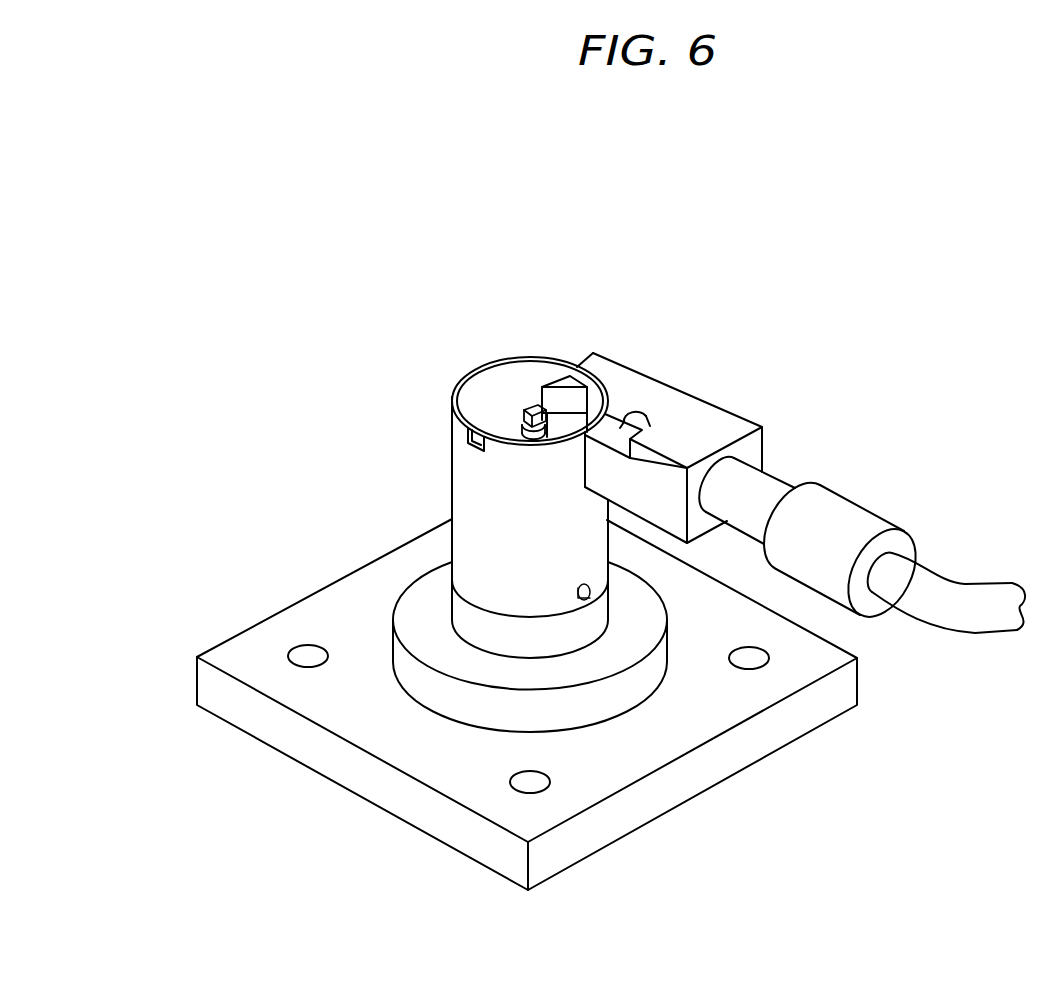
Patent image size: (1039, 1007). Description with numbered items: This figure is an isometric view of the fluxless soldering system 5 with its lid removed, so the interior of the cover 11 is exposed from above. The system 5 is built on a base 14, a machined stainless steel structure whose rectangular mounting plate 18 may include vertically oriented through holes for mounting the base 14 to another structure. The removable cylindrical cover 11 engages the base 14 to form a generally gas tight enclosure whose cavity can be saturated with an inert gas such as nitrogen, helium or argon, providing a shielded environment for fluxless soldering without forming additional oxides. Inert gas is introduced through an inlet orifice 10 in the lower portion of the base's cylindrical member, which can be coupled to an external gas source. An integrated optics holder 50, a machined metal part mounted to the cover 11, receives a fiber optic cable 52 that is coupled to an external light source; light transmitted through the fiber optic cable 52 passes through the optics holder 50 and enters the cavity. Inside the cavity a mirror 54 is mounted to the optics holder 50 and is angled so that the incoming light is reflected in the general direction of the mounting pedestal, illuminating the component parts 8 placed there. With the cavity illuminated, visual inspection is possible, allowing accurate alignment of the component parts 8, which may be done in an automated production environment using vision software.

The system 5 is at (522, 186).
The component parts 8 is at (528, 407).
The inlet orifice 10 is at (587, 593).
The cover 11 is at (480, 493).
The base 14 is at (620, 758).
The mounting plate 18 is at (375, 720).
The optics holder 50 is at (713, 423).
The fiber optic cable 52 is at (845, 523).
The mirror 54 is at (570, 400).